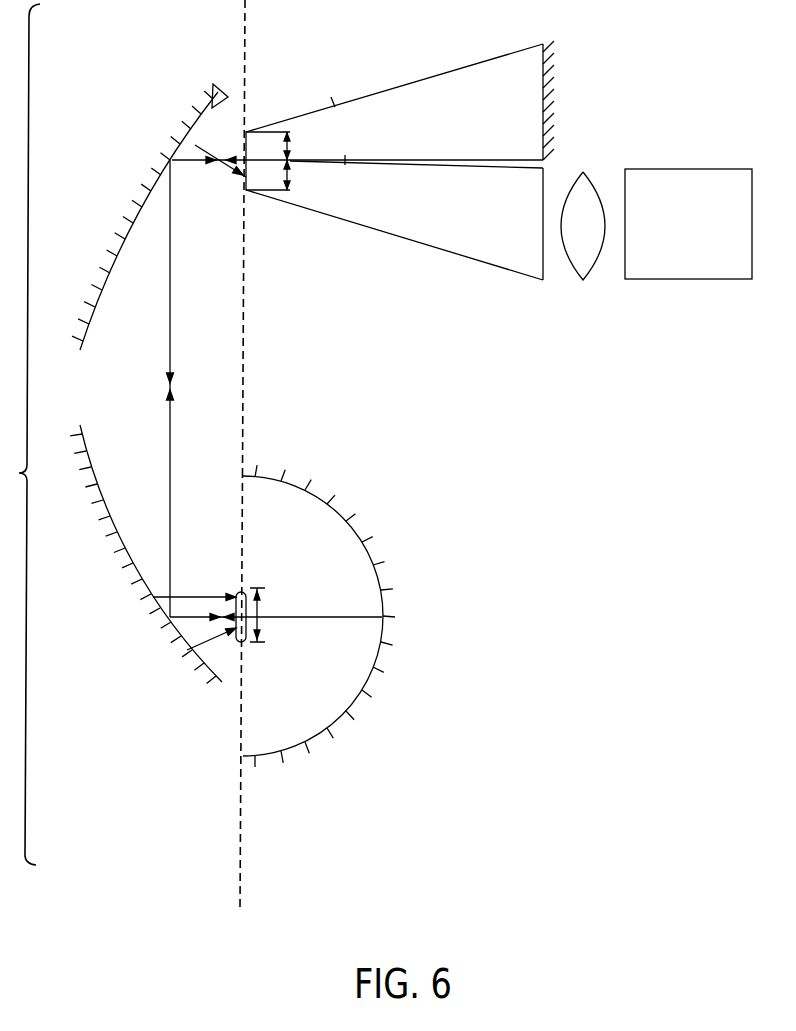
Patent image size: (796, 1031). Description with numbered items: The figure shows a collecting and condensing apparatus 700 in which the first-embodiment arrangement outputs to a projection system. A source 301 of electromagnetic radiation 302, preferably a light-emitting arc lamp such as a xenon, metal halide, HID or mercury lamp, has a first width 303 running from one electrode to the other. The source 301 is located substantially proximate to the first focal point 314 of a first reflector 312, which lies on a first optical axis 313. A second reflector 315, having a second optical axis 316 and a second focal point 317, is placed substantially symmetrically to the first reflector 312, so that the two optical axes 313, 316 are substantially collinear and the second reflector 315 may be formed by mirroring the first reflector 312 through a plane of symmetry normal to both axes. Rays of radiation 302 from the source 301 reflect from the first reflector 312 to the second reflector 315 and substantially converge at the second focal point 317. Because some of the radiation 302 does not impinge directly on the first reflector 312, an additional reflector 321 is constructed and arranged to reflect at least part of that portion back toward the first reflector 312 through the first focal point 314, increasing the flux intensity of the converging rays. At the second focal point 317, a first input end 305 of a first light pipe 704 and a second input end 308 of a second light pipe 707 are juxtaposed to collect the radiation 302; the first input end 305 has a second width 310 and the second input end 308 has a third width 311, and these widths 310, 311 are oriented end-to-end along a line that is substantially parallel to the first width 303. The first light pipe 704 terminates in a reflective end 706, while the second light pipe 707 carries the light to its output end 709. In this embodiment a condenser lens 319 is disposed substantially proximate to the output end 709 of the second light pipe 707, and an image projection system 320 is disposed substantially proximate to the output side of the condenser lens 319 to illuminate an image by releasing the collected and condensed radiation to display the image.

The optical illumination system 700 is at (387, 800).
The source 301 is at (262, 644).
The first width 303 is at (262, 583).
The first focal point 314 is at (240, 598).
The first reflector 312 is at (112, 520).
The additional reflector 321 is at (363, 693).
The electromagnetic radiation 302 is at (172, 480).
The first optical axis 313 is at (243, 815).
The second optical axis 316 is at (247, 40).
The second reflector 315 is at (140, 205).
The second focal point 317 is at (236, 141).
The first input end 305 is at (254, 147).
The second input end 308 is at (254, 173).
The second width 310 is at (292, 144).
The third width 311 is at (292, 179).
The upper light beam 704 is at (377, 90).
The second light pipe 707 is at (387, 233).
The reflective surface 706 is at (548, 100).
The output end 709 is at (480, 230).
The condenser lens 319 is at (583, 282).
The image projection system 320 is at (675, 280).